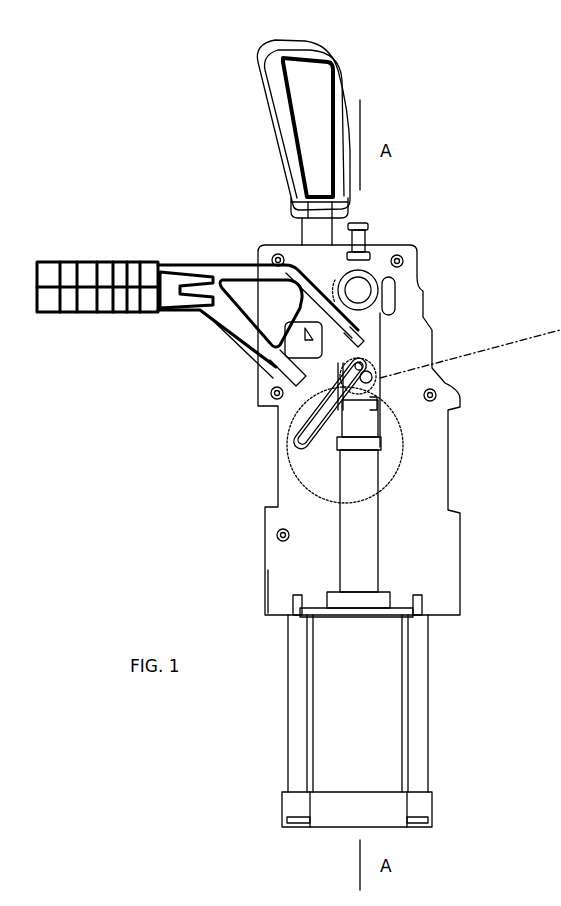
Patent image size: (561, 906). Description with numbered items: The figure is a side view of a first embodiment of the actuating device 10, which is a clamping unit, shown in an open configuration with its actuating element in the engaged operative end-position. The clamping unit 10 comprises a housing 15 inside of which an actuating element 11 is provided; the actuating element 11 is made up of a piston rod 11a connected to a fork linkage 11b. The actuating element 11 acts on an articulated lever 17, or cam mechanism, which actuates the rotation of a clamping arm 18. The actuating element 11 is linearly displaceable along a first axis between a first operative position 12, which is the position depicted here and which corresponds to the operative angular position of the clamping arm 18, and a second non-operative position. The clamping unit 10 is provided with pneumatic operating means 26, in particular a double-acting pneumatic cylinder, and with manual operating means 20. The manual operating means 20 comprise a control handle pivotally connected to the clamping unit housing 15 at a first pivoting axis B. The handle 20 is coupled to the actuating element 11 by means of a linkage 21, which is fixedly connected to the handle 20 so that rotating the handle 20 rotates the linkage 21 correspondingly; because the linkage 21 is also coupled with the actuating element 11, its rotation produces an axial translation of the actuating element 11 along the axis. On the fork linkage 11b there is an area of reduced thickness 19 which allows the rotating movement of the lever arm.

The actuating device 10 is at (243, 717).
The actuating element 11 is at (170, 423).
The piston rod 11a is at (353, 505).
The fork linkage 11b is at (320, 397).
The first operative position 12 is at (366, 455).
The housing 15 is at (427, 322).
The articulated lever 17 is at (375, 252).
The clamping arm 18 is at (60, 262).
The area of reduced thickness 19 is at (366, 373).
The manual operating means 20 is at (300, 148).
The linkage 21 is at (358, 418).
The pneumatic operating means 26 is at (368, 702).
The first pivoting axis B is at (381, 497).